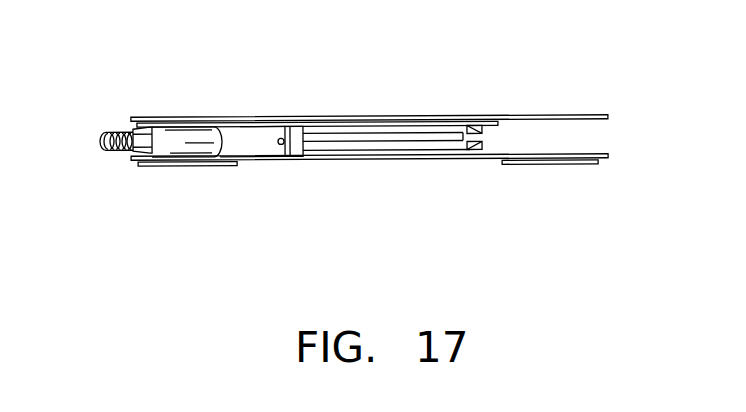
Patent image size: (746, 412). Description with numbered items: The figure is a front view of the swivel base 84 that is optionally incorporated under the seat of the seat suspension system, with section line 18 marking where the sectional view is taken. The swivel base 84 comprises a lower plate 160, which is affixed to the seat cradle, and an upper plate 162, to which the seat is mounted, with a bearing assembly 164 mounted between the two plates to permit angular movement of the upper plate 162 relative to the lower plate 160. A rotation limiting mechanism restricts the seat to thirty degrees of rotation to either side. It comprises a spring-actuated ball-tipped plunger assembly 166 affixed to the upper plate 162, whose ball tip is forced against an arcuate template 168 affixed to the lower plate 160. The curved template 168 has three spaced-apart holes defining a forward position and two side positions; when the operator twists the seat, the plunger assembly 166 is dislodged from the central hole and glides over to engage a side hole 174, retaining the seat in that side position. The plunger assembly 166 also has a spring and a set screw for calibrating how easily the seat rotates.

The section line 18- 18 is at (48, 130).
The swivel base 84 is at (606, 76).
The lower plate 160 is at (607, 160).
The upper plate 162 is at (558, 115).
The bearing assembly 164 is at (435, 138).
The spring-actuated ball-tipped plunger assembly 166 is at (174, 143).
The arcuate template 168 is at (254, 140).
The side hole 174 is at (282, 138).